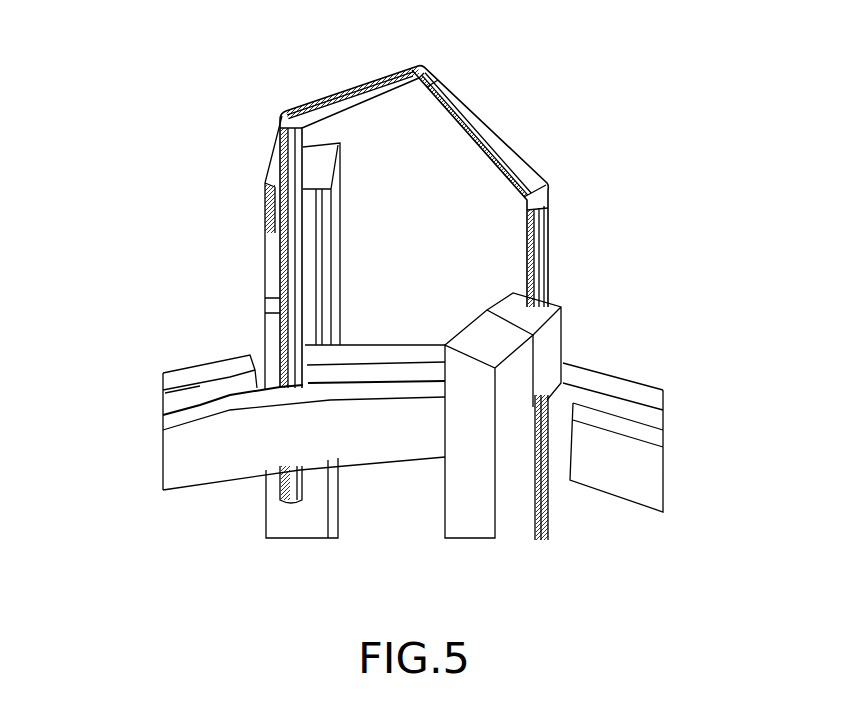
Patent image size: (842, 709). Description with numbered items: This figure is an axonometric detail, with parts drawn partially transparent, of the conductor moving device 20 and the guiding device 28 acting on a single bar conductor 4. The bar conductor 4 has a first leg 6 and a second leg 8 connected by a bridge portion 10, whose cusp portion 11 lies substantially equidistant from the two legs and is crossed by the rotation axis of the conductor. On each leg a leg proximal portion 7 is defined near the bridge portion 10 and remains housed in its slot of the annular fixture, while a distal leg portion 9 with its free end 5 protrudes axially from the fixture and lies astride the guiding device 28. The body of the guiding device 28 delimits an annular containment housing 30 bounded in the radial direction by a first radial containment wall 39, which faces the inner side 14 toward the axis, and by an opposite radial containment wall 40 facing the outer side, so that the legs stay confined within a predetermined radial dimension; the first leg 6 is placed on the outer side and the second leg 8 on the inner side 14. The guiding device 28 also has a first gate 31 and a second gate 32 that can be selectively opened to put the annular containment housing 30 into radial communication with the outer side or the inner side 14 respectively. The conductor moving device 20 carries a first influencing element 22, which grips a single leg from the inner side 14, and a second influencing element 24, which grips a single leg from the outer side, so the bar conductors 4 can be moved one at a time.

The bar conductor 4 is at (536, 184).
The bridge portion 10 is at (488, 128).
The cusp portion 11 is at (424, 70).
The second leg 8 is at (550, 274).
The leg proximal portion 7 is at (269, 222).
The second influencing element 24 is at (265, 193).
The first leg 6 is at (283, 313).
The annular containment housing 30 is at (210, 385).
The first gate 31 is at (245, 347).
The first radial containment wall 39 is at (193, 397).
The inner side 14 is at (400, 446).
The free end 5 is at (293, 503).
The distal leg portion 9 is at (283, 483).
The conductor moving device 20 is at (467, 502).
The first influencing element 22 is at (562, 332).
The second gate 32 is at (557, 452).
The guiding device 28 is at (623, 386).
The radial containment wall 40 is at (626, 419).